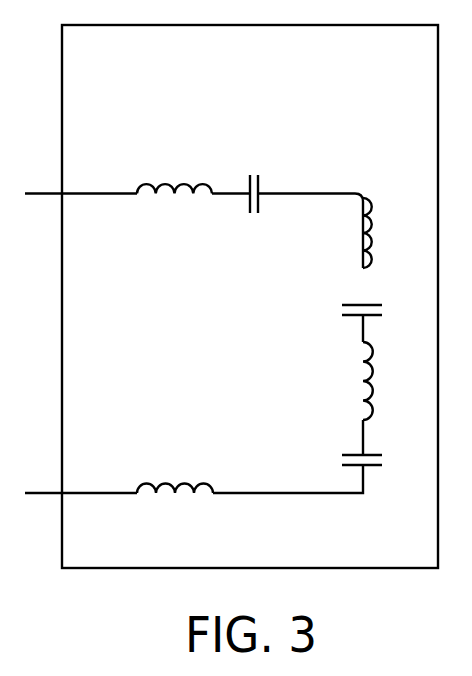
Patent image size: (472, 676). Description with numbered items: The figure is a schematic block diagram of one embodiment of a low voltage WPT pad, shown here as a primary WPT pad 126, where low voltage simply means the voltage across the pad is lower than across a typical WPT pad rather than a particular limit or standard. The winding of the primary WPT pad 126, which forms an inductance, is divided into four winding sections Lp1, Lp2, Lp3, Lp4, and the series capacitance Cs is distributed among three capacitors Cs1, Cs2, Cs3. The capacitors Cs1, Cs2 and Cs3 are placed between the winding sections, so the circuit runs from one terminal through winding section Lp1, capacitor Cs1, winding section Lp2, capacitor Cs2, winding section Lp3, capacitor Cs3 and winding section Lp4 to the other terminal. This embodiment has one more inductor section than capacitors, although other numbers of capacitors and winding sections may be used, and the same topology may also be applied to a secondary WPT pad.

The primary WPT pad 126 is at (229, 92).
The winding section Lp1 is at (174, 203).
The winding section Lp2 is at (347, 233).
The winding section Lp3 is at (346, 381).
The winding section Lp4 is at (175, 505).
The capacitor Cs1 is at (249, 208).
The capacitor Cs2 is at (338, 307).
The capacitor Cs3 is at (338, 455).